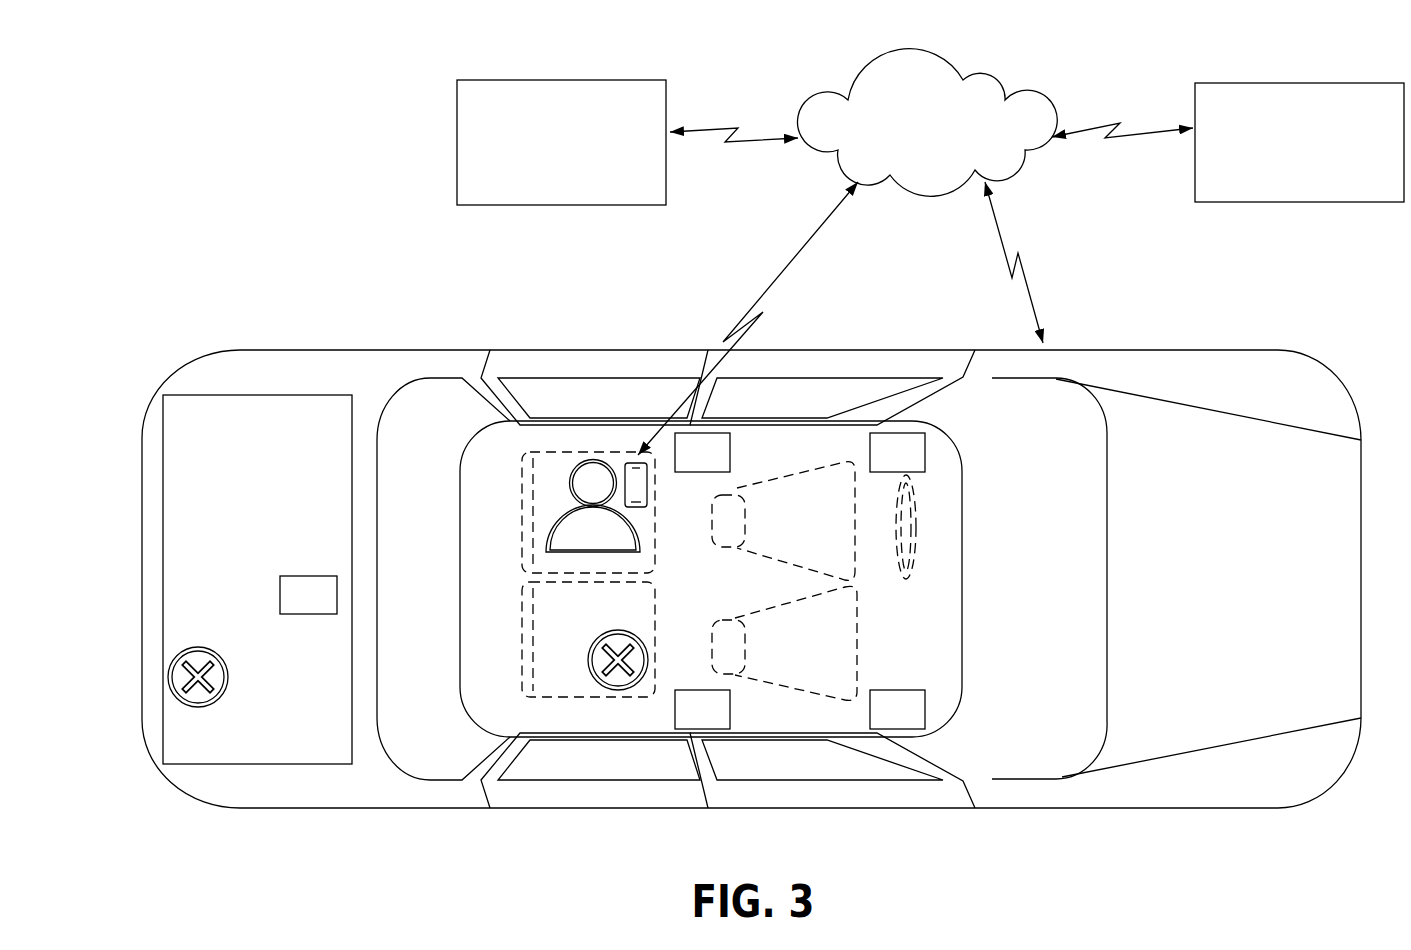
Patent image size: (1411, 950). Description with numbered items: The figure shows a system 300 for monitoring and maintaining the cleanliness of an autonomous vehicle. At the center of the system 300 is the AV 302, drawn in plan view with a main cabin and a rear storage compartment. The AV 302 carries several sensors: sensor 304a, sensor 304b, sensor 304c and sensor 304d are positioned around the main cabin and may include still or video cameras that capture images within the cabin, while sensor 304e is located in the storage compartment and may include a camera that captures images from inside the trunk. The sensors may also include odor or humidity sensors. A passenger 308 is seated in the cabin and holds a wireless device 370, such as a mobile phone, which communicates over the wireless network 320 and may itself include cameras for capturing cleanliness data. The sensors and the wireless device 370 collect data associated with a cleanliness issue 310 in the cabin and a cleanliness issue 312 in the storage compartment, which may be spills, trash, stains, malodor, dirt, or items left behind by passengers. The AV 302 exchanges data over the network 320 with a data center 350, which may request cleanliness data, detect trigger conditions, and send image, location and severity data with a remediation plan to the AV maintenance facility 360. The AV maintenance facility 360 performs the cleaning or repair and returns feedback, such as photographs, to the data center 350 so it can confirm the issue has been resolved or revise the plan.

The system 300 is at (130, 52).
The autonomous vehicle 302 is at (176, 372).
The sensor 304a is at (727, 465).
The sensor 304b is at (922, 465).
The sensor 304c is at (727, 722).
The sensor 304d is at (922, 722).
The sensor 304e is at (334, 608).
The passenger 308 is at (577, 541).
The cleanliness issue 310 is at (600, 640).
The cleanliness issue 312 is at (228, 680).
The wireless network 320 is at (907, 156).
The data center 350 is at (542, 177).
The AV maintenance facility 360 is at (1280, 194).
The wireless device 370 is at (647, 488).